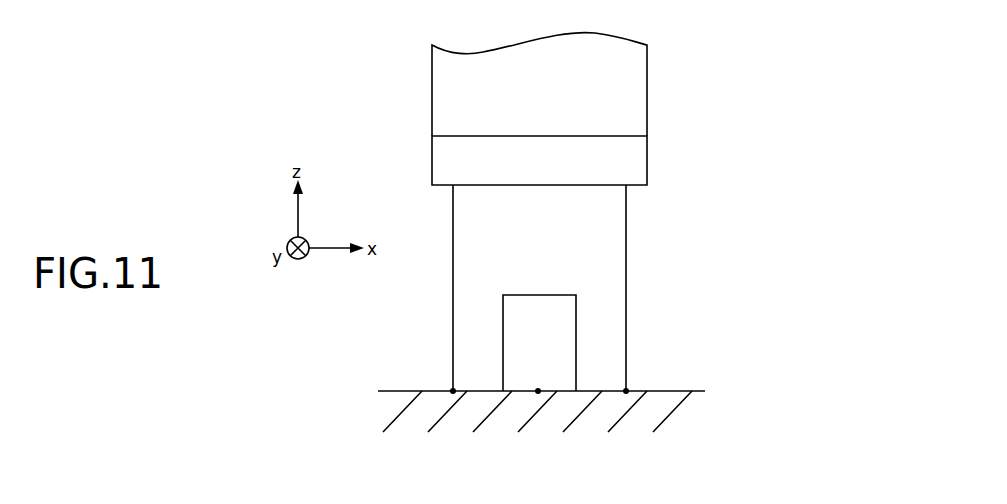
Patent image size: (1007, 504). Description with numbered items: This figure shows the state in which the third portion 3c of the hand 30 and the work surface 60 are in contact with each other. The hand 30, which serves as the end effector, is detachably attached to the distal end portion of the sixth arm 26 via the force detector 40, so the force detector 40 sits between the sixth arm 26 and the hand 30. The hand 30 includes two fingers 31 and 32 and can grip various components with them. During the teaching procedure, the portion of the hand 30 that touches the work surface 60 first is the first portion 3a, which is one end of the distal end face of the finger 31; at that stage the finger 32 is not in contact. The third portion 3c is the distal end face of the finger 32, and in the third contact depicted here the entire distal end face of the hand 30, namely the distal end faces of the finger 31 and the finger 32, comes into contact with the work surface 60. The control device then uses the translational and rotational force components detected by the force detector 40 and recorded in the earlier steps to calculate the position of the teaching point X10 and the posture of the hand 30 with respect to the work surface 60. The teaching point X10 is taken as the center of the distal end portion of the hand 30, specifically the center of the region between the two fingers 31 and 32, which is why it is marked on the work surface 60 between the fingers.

The sixth arm 26 is at (656, 83).
The force detector 40 is at (656, 157).
The hand 30 is at (632, 242).
The finger 32 is at (477, 312).
The finger 31 is at (597, 344).
The third portion 3c is at (453, 391).
The first portion 3a is at (626, 391).
The teaching point X10 is at (538, 391).
The work surface 60 is at (692, 391).